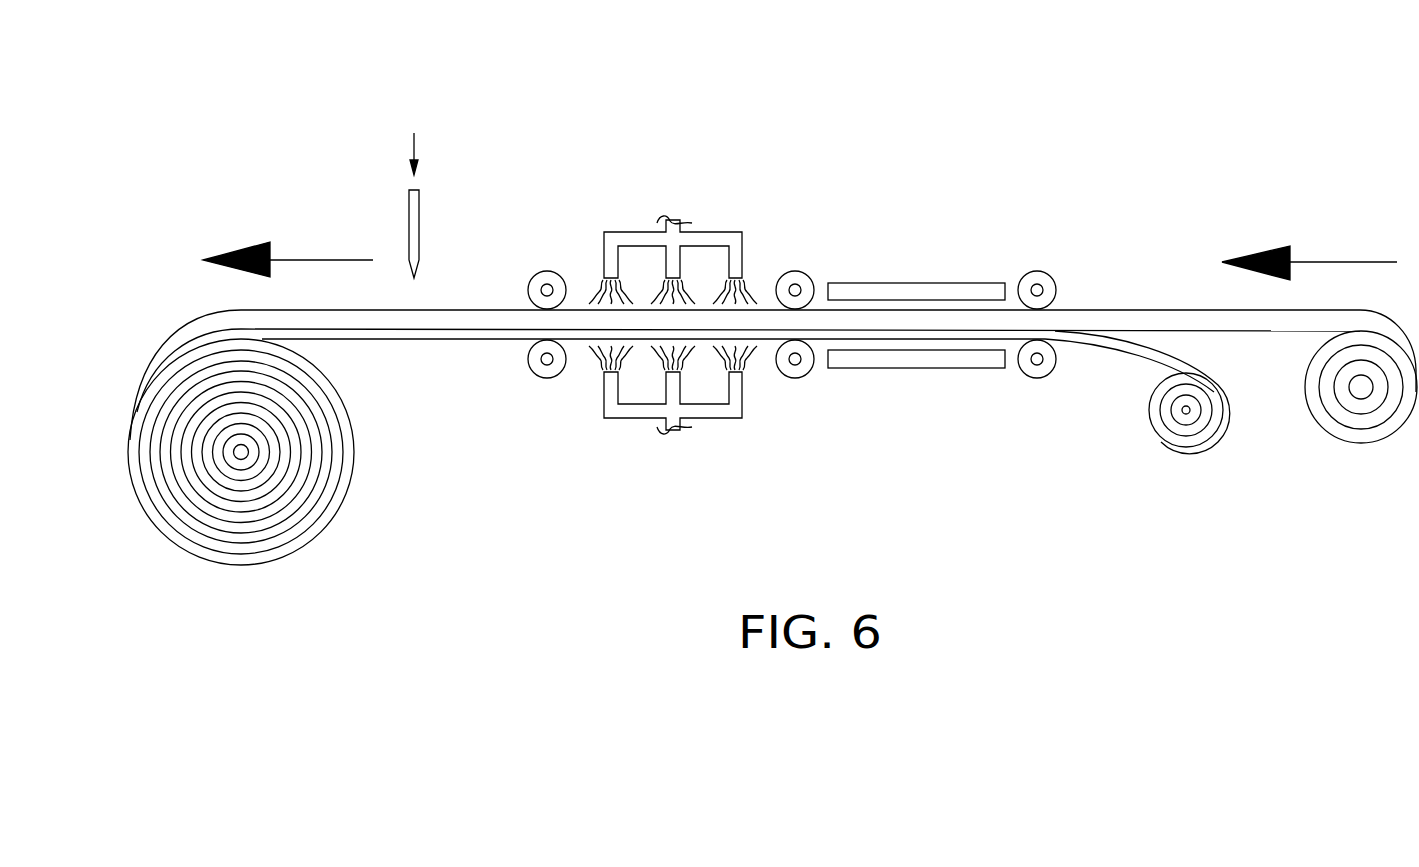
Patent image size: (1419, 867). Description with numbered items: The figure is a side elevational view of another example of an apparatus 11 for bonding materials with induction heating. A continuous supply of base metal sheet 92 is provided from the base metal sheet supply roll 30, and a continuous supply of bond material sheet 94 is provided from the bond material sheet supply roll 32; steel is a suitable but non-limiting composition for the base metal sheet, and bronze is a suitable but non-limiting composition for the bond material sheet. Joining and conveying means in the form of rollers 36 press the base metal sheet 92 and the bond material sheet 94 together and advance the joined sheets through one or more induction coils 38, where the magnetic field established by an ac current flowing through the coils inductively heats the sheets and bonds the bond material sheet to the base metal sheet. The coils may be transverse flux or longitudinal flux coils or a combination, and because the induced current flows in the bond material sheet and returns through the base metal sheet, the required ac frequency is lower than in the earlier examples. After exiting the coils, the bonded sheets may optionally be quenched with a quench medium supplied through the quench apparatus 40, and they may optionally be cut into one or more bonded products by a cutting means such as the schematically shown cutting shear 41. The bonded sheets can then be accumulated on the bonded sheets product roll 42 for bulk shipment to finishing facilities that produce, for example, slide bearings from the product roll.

The apparatus 11 is at (1132, 119).
The base metal sheet supply roll 30 is at (1136, 465).
The bond material sheet supply roll 32 is at (1310, 469).
The rollers 36 is at (546, 270).
The induction coils 38 is at (935, 293).
The quench apparatus 40 is at (628, 238).
The cutting shear 41 is at (420, 271).
The bonded sheets product roll 42 is at (361, 586).
The base metal sheet 92 is at (1128, 342).
The bond material sheet 94 is at (1112, 324).